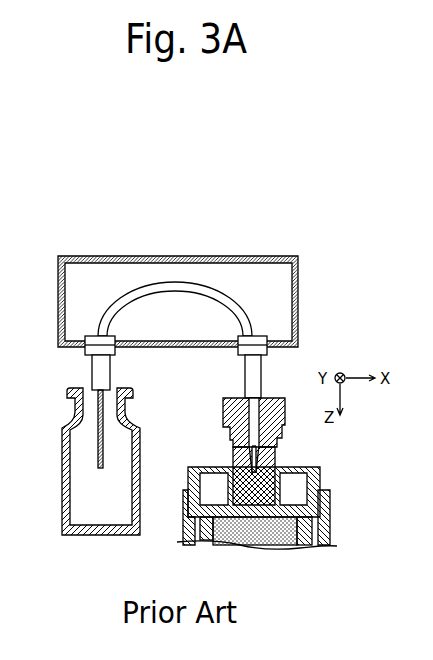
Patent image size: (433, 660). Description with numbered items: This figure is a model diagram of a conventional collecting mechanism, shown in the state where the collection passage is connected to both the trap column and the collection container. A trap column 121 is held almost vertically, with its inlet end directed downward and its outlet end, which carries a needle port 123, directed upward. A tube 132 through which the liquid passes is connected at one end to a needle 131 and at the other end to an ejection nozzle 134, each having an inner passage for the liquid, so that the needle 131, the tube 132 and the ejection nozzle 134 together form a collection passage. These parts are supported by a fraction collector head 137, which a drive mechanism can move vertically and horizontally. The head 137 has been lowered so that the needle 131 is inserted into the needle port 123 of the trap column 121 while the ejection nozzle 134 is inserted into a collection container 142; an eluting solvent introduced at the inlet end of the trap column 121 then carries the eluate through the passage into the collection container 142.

The fraction collector head 137 is at (236, 256).
The tube 132 is at (173, 279).
The collection container 142 is at (62, 493).
The ejection nozzle 134 is at (97, 445).
The needle 131 is at (222, 402).
The needle port 123 is at (234, 448).
The trap column 121 is at (329, 517).